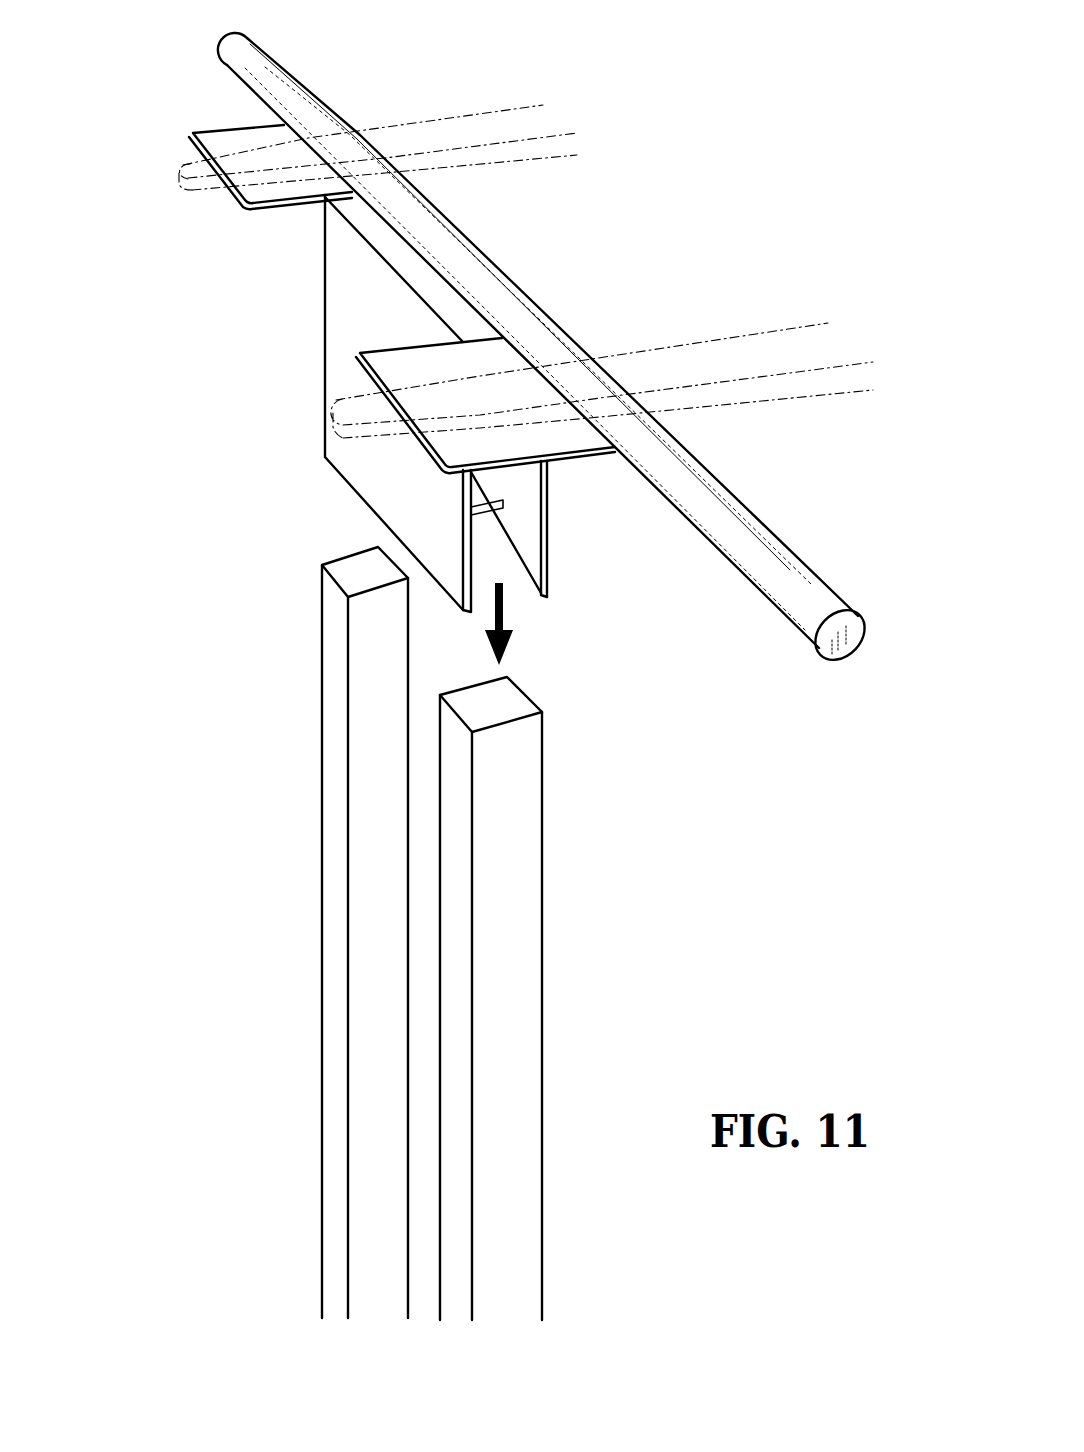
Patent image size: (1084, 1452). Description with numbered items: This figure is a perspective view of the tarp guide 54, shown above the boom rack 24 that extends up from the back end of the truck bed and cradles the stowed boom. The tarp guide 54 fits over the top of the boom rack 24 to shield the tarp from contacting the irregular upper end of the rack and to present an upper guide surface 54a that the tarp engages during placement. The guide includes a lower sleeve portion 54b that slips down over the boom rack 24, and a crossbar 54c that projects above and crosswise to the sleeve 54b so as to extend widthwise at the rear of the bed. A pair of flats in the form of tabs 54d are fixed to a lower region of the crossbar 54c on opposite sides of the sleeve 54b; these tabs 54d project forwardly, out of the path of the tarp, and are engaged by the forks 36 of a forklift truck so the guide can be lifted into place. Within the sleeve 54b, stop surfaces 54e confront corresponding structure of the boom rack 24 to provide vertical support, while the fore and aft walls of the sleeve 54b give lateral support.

The boom rack 24 is at (513, 985).
The forks 36 is at (483, 123).
The tarp guide 54 is at (503, 351).
The upper guide surface 54a is at (483, 272).
The lower sleeve portion 54b is at (548, 567).
The crossbar 54c is at (747, 508).
The tabs 54d is at (222, 142).
The stop surfaces 54e is at (503, 506).